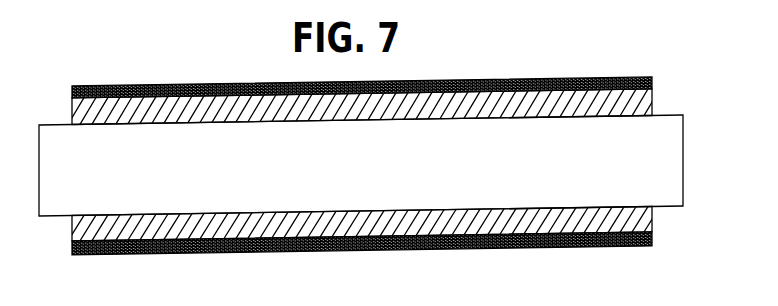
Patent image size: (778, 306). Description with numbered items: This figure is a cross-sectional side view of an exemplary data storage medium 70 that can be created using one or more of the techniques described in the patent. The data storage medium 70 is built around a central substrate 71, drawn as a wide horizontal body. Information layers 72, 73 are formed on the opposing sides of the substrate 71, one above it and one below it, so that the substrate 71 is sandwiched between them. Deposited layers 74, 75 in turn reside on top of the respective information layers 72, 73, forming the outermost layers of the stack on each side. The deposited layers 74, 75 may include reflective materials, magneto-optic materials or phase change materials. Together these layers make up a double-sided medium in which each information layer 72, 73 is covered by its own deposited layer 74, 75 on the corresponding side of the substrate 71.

The data storage medium 70 is at (447, 74).
The substrate 71 is at (684, 160).
The information layer 72 is at (654, 100).
The information layer 73 is at (656, 220).
The deposited layer 74 is at (71, 92).
The deposited layer 75 is at (72, 249).